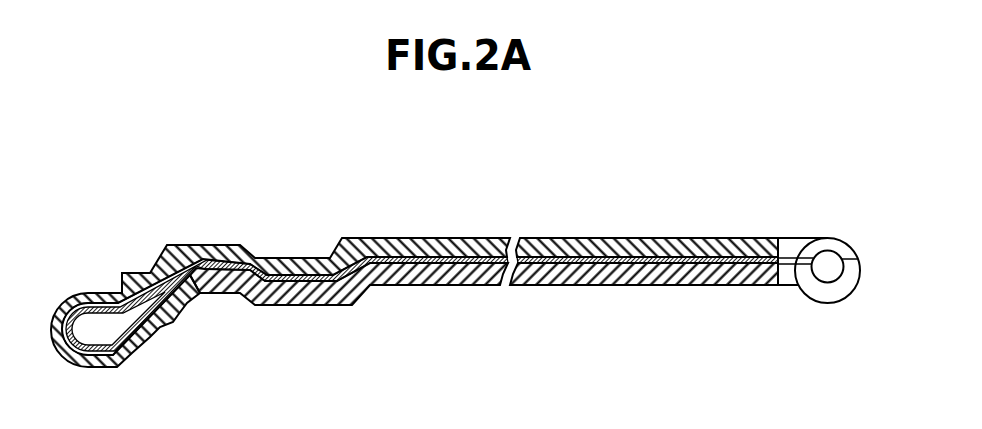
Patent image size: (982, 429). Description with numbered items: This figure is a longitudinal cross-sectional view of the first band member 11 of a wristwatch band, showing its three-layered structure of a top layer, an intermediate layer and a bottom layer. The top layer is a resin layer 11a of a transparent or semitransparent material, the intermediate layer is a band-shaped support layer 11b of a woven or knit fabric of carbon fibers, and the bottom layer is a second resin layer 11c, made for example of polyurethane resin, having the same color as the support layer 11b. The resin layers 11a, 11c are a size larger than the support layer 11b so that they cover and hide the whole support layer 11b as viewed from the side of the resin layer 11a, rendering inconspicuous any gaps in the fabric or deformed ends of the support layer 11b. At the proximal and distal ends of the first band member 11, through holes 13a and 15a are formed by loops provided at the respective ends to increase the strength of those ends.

The first band member 11 is at (468, 216).
The resin layer 11a is at (553, 242).
The support layer 11b is at (614, 254).
The second resin layer 11c is at (402, 286).
The through hole 13a is at (93, 326).
The through hole 15a is at (831, 262).